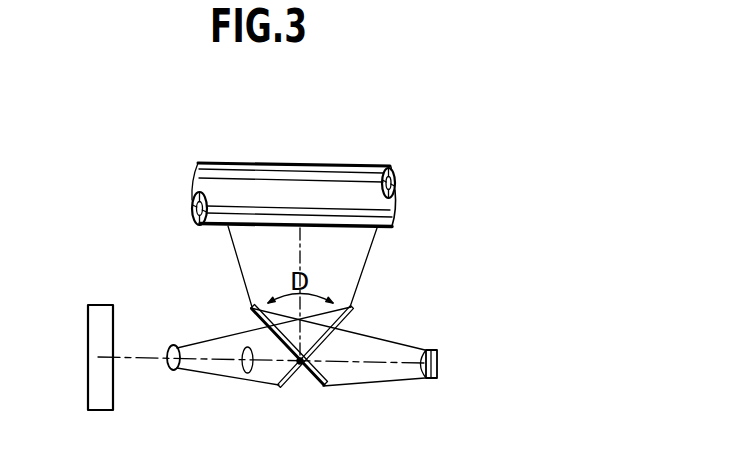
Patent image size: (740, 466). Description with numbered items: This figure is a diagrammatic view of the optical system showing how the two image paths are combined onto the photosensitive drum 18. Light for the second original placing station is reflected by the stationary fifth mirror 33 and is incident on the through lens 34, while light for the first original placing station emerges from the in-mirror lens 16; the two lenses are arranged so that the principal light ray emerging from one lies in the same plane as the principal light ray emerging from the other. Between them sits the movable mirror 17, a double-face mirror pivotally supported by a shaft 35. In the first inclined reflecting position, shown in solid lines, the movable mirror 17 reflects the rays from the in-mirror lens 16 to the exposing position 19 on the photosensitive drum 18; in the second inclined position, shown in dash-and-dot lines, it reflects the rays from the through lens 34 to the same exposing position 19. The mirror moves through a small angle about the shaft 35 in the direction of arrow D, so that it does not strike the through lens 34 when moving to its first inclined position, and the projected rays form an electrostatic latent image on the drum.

The in-mirror lens 16 is at (437, 358).
The movable mirror 17 is at (308, 371).
The photosensitive drum 18 is at (348, 172).
The exposing position 19 is at (354, 233).
The fifth mirror 33 is at (98, 327).
The through lens 34 is at (175, 370).
The shaft 35 is at (298, 371).